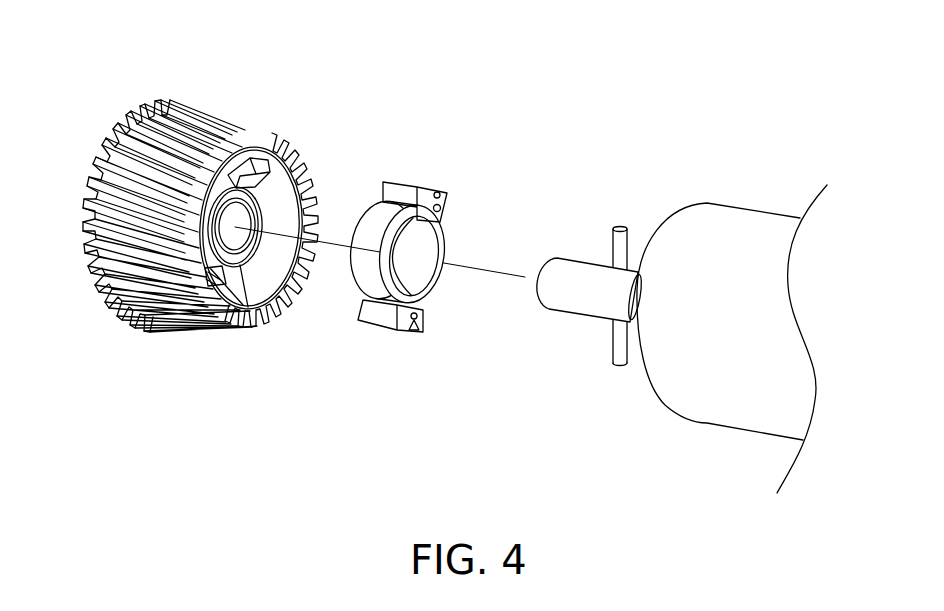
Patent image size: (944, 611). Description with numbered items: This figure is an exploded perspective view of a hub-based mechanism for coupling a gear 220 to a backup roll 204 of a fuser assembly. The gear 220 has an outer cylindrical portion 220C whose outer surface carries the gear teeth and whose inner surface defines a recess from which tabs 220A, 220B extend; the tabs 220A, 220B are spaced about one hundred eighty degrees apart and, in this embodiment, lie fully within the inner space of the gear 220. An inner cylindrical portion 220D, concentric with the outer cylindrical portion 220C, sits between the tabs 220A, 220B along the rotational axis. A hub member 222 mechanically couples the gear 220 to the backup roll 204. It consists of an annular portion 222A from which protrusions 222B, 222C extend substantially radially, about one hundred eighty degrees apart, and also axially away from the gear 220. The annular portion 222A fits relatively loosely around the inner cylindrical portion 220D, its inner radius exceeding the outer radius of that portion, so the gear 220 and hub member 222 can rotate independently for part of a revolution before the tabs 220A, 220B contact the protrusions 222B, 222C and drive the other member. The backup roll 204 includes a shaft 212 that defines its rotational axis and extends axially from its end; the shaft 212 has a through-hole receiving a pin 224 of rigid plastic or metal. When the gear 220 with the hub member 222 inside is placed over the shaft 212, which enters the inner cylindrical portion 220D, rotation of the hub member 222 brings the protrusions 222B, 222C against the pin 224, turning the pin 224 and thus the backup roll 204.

The gear 220 is at (219, 220).
The tab 220A is at (266, 172).
The tab 220B is at (242, 323).
The outer cylindrical portion 220C is at (270, 267).
The inner cylindrical portion 220D is at (250, 310).
The hub member 222 is at (415, 214).
The annular portion 222A is at (363, 215).
The protrusion 222B is at (420, 187).
The protrusion 222C is at (370, 327).
The shaft 212 is at (568, 303).
The pin 224 is at (618, 242).
The backup roll 204 is at (737, 212).